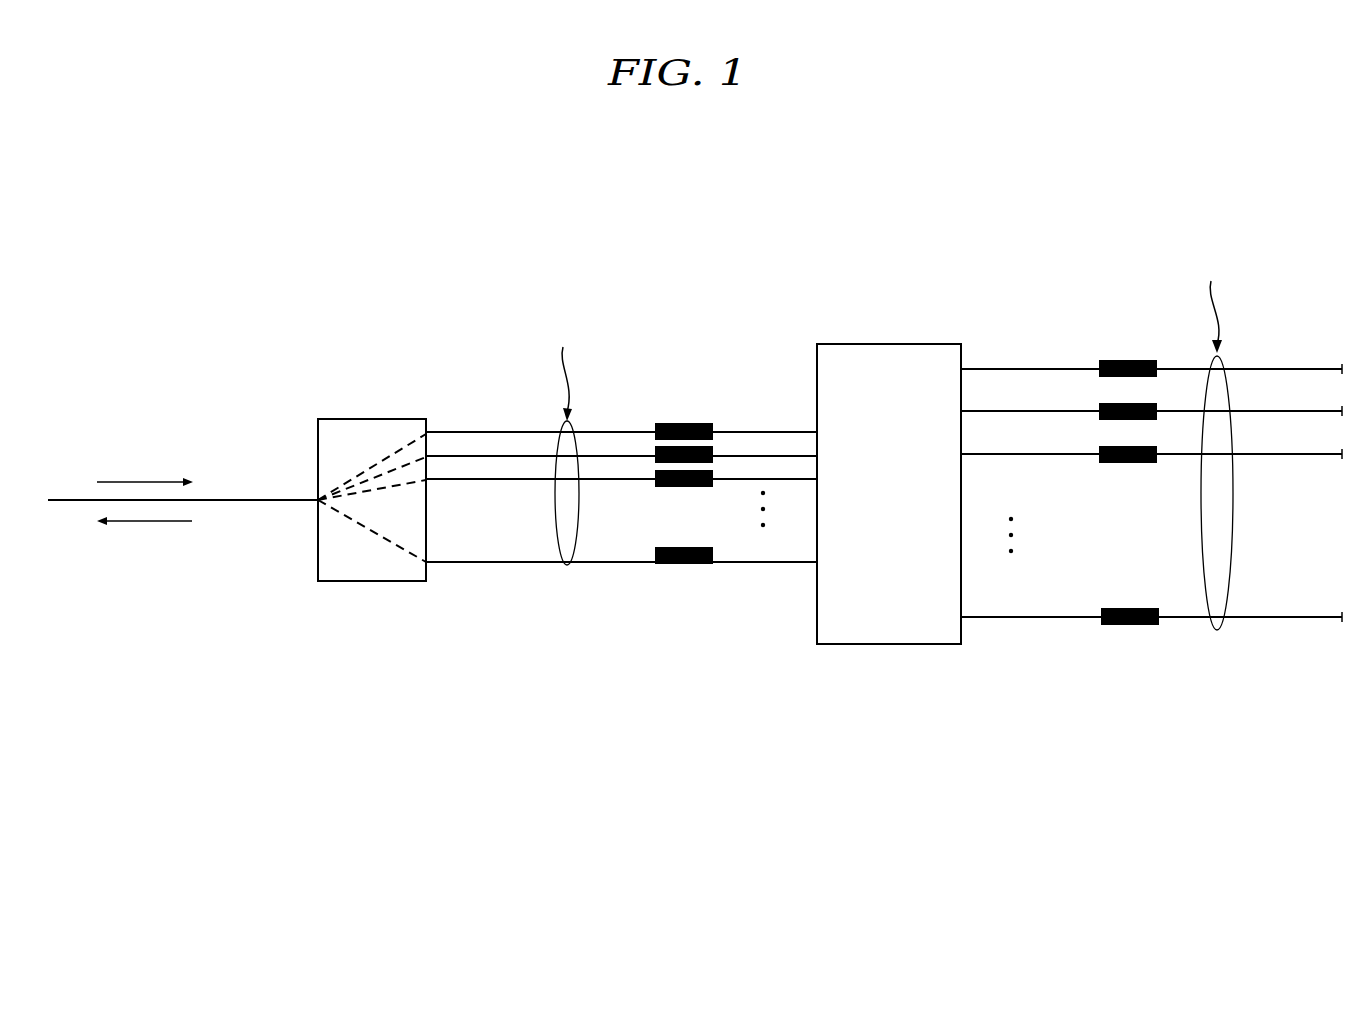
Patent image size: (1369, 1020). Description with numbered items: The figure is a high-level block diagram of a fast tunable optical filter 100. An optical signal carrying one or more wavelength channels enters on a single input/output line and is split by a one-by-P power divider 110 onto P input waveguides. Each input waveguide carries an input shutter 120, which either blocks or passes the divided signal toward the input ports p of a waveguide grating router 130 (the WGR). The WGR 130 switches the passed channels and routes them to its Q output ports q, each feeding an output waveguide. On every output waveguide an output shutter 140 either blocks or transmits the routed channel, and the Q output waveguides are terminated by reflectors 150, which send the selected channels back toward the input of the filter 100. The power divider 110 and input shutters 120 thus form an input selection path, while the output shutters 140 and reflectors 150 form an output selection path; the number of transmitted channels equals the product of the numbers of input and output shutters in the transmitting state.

The fast tunable optical filter 100 is at (695, 157).
The power divider 110 is at (367, 582).
The input shutters 120 is at (680, 576).
The waveguide grating router (WGR) 130 is at (895, 645).
The output shutters 140 is at (1127, 636).
The reflectors 150 is at (1336, 638).